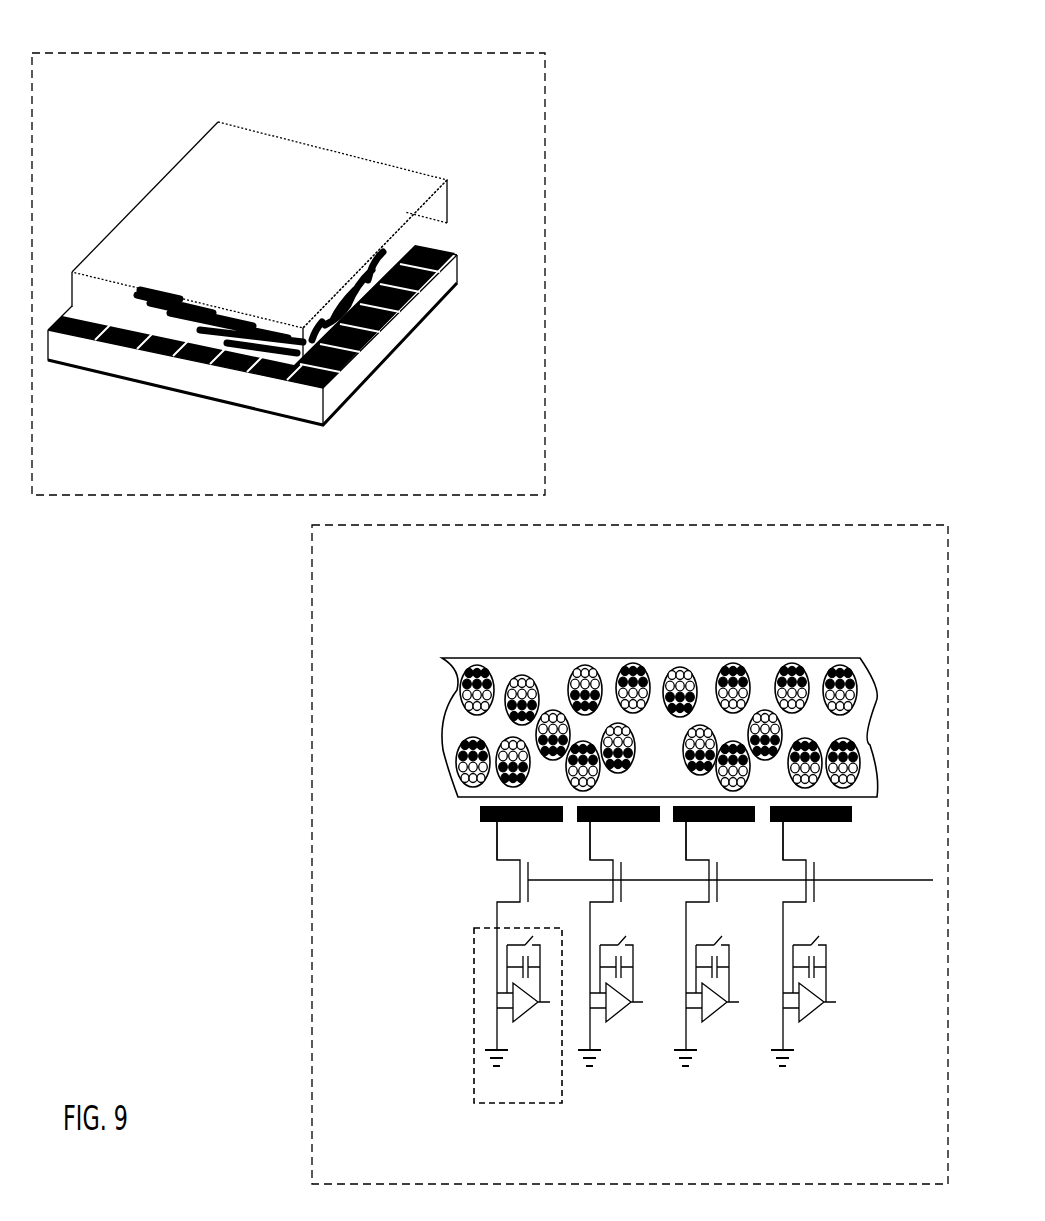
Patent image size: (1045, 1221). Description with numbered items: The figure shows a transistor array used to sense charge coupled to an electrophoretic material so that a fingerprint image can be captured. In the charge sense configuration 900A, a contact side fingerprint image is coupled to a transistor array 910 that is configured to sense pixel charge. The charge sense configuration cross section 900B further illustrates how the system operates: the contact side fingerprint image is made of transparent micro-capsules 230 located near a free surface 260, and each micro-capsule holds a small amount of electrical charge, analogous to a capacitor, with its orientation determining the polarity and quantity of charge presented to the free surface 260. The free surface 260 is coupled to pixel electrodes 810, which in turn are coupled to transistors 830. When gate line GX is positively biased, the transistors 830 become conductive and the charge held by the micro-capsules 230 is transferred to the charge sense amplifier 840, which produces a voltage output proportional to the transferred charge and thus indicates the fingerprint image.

The charge sense configuration 900A is at (562, 253).
The charge sense configuration cross section 900B is at (305, 753).
The transistor array 910 is at (458, 278).
The transparent micro-capsules 230 is at (457, 690).
The free surface 260 is at (463, 797).
The pixel electrodes 810 is at (472, 827).
The transistors 830 is at (709, 944).
The charge sense amplifier 840 is at (562, 1058).